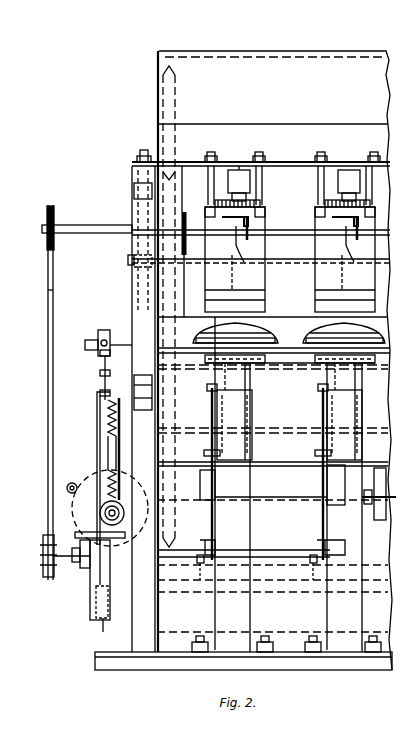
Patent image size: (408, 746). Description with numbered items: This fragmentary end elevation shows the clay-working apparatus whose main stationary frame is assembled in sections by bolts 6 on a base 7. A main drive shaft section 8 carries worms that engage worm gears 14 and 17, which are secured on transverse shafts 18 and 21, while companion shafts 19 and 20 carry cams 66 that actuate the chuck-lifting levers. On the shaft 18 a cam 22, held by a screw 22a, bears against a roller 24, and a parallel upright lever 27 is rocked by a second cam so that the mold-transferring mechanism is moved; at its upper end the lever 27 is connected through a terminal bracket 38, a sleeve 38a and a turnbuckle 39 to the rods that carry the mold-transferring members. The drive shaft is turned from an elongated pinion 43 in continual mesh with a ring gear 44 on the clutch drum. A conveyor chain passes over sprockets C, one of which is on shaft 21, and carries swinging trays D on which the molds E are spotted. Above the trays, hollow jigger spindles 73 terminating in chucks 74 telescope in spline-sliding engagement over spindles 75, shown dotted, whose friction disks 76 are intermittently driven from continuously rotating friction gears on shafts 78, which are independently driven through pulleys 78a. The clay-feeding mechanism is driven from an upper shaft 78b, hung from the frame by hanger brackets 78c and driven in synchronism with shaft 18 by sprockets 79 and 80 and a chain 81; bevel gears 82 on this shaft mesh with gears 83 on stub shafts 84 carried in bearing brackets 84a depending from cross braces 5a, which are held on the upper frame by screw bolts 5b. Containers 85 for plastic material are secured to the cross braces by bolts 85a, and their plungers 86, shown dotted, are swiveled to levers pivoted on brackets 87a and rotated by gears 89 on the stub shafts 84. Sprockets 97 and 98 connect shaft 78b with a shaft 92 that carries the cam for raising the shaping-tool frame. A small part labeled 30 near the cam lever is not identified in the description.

The cross braces 5a is at (300, 162).
The screw bolts 5b is at (142, 153).
The bolts 6 is at (286, 636).
The base 7 is at (340, 671).
The main drive shaft section 8 is at (125, 514).
The worm gear 14 is at (104, 572).
The worm gear 17 is at (107, 429).
The shaft 18 is at (172, 560).
The shaft 19 is at (268, 568).
The shaft 20 is at (302, 565).
The shaft 21 is at (295, 462).
The cam 22 is at (84, 570).
The screw 22a is at (74, 562).
The roller 24 is at (75, 535).
The lever 27 is at (96, 402).
The block 30 is at (100, 604).
The terminal bracket 38 is at (98, 335).
The sleeve 38a is at (106, 338).
The turnbuckle 39 is at (99, 373).
The drive pinion 43 is at (72, 482).
The ring gear 44 is at (70, 493).
The cams 66 is at (201, 565).
The hollow jigger spindles 73 is at (246, 380).
The chucks 74 is at (318, 366).
The spindles 75 is at (327, 415).
The friction gears 76 is at (252, 465).
The shafts 78 is at (280, 498).
The pulleys 78a is at (380, 520).
The upper drive shaft 78b is at (96, 225).
The hanger brackets 78c is at (134, 242).
The sprocket 79 is at (44, 570).
The sprocket 80 is at (46, 216).
The chain 81 is at (47, 320).
The bevel gears 82 is at (248, 238).
The gears 83 is at (295, 253).
The stub shafts 84 is at (224, 222).
The bearing brackets 84a is at (349, 170).
The containers 85 is at (315, 282).
The bolts 85a is at (371, 192).
The plungers 86 is at (276, 272).
The brackets 87a is at (246, 196).
The gears 89 is at (224, 201).
The shaft 92 is at (196, 258).
The sprocket 97 is at (184, 226).
The sprocket 98 is at (194, 233).
The sprockets C is at (176, 92).
The mold carriers D is at (180, 326).
The molds E is at (306, 330).